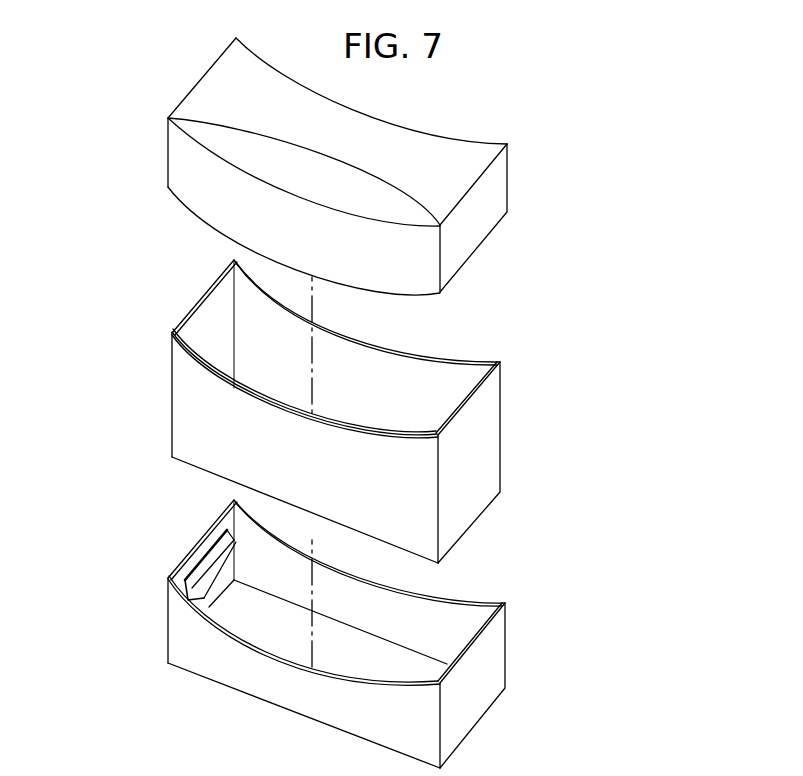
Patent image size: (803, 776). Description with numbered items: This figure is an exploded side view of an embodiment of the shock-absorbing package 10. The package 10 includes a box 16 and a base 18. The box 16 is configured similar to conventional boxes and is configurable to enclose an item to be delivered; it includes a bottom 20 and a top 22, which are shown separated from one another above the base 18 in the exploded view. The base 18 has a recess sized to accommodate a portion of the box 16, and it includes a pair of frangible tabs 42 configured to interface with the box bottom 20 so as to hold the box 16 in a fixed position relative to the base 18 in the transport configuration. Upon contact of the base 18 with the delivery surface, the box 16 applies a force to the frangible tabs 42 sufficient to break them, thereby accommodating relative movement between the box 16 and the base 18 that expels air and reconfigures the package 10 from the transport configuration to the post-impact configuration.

The shock-absorbing package 10 is at (652, 127).
The box 16 is at (557, 120).
The top 22 is at (191, 89).
The bottom 20 is at (191, 306).
The base 18 is at (204, 534).
The frangible tabs 42 is at (180, 581).